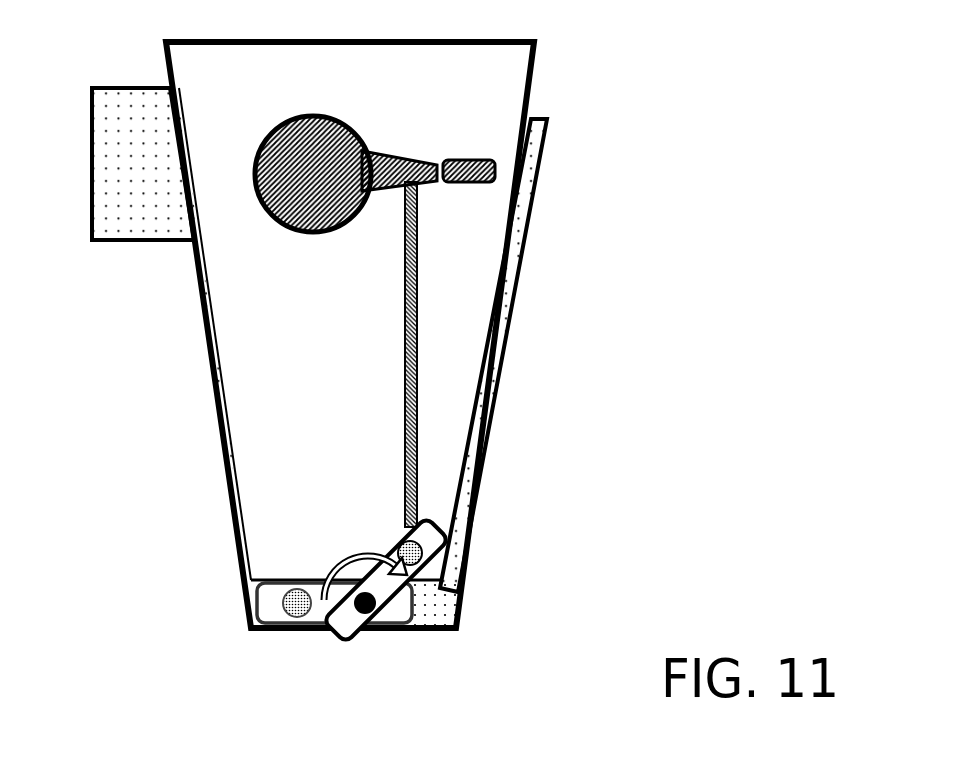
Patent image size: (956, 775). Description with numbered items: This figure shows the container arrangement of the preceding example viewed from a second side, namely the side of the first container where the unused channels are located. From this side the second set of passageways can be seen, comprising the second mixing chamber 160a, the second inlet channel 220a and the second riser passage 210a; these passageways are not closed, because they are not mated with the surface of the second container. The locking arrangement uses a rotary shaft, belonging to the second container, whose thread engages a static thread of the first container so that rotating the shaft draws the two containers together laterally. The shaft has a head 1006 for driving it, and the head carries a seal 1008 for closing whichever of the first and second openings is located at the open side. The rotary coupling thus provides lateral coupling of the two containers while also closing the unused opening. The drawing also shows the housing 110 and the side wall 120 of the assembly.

The housing 110 is at (532, 87).
The side wall / door 120 is at (203, 347).
The second mixing chamber 160a is at (265, 135).
The second riser passage 210a is at (405, 386).
The second inlet channel 220a is at (470, 158).
The head 1006 is at (392, 550).
The seal 1008 is at (472, 552).